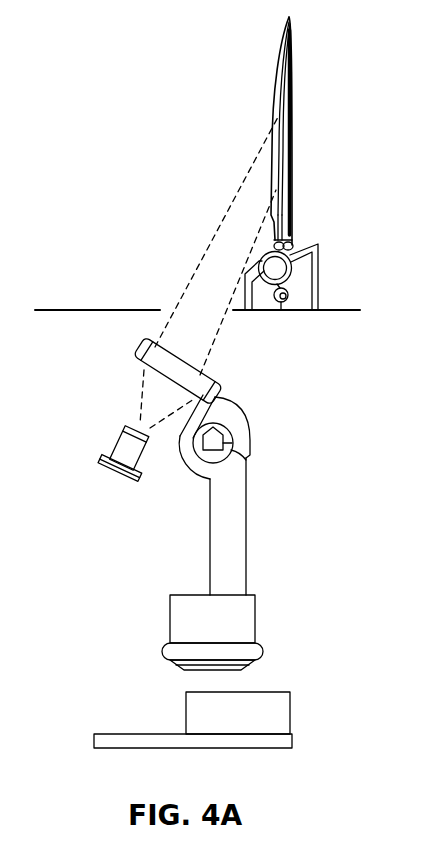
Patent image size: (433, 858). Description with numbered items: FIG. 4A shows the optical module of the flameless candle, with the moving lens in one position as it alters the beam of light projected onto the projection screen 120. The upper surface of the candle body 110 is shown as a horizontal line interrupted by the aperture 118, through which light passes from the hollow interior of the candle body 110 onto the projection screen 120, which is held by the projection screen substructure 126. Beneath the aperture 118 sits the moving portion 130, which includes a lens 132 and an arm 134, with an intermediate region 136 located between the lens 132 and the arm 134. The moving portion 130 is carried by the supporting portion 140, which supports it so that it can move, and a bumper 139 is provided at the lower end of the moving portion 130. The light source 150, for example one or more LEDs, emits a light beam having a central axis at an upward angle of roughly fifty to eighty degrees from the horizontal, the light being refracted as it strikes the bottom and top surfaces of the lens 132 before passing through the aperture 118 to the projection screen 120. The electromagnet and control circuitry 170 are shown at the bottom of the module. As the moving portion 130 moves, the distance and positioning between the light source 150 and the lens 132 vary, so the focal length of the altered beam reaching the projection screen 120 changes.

The candle body 110 is at (57, 310).
The aperture 118 is at (168, 308).
The projection screen 120 is at (293, 88).
The projection screen substructure 126 is at (320, 278).
The moving portion 130 is at (196, 503).
The lens 132 is at (135, 352).
The arm 134 is at (244, 480).
The intermediate region 136 is at (248, 518).
The bumper 139 is at (160, 652).
The supporting portion 140 is at (246, 434).
The light source 150 is at (100, 458).
The electromagnet and control circuitry 170 is at (285, 713).